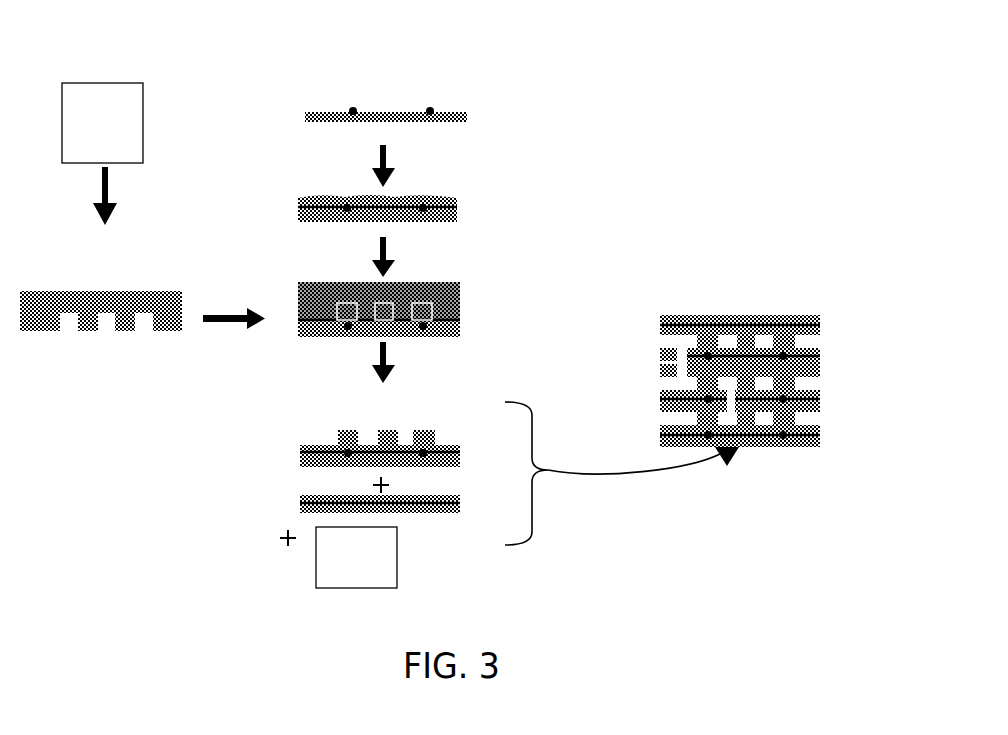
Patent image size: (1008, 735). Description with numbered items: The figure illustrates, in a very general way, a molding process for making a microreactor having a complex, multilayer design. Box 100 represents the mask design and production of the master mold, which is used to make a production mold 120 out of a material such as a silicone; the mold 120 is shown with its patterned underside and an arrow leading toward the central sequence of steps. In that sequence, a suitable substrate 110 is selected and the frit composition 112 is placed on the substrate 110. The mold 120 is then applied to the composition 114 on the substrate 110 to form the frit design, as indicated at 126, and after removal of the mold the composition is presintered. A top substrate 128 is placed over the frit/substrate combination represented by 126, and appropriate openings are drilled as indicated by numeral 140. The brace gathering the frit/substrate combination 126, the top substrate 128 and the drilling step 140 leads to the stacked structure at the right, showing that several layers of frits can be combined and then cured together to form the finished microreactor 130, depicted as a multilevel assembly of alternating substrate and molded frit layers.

The box representing mask design and master mold production 100 is at (102, 123).
The substrate 110 is at (466, 80).
The frit composition 112 is at (457, 202).
The composition on substrate 114 is at (460, 296).
The production mold 120 is at (122, 337).
The frit design on substrate 126 is at (298, 452).
The top substrate 128 is at (298, 492).
The finished microreactor 130 is at (726, 298).
The drilling of openings 140 is at (356, 557).